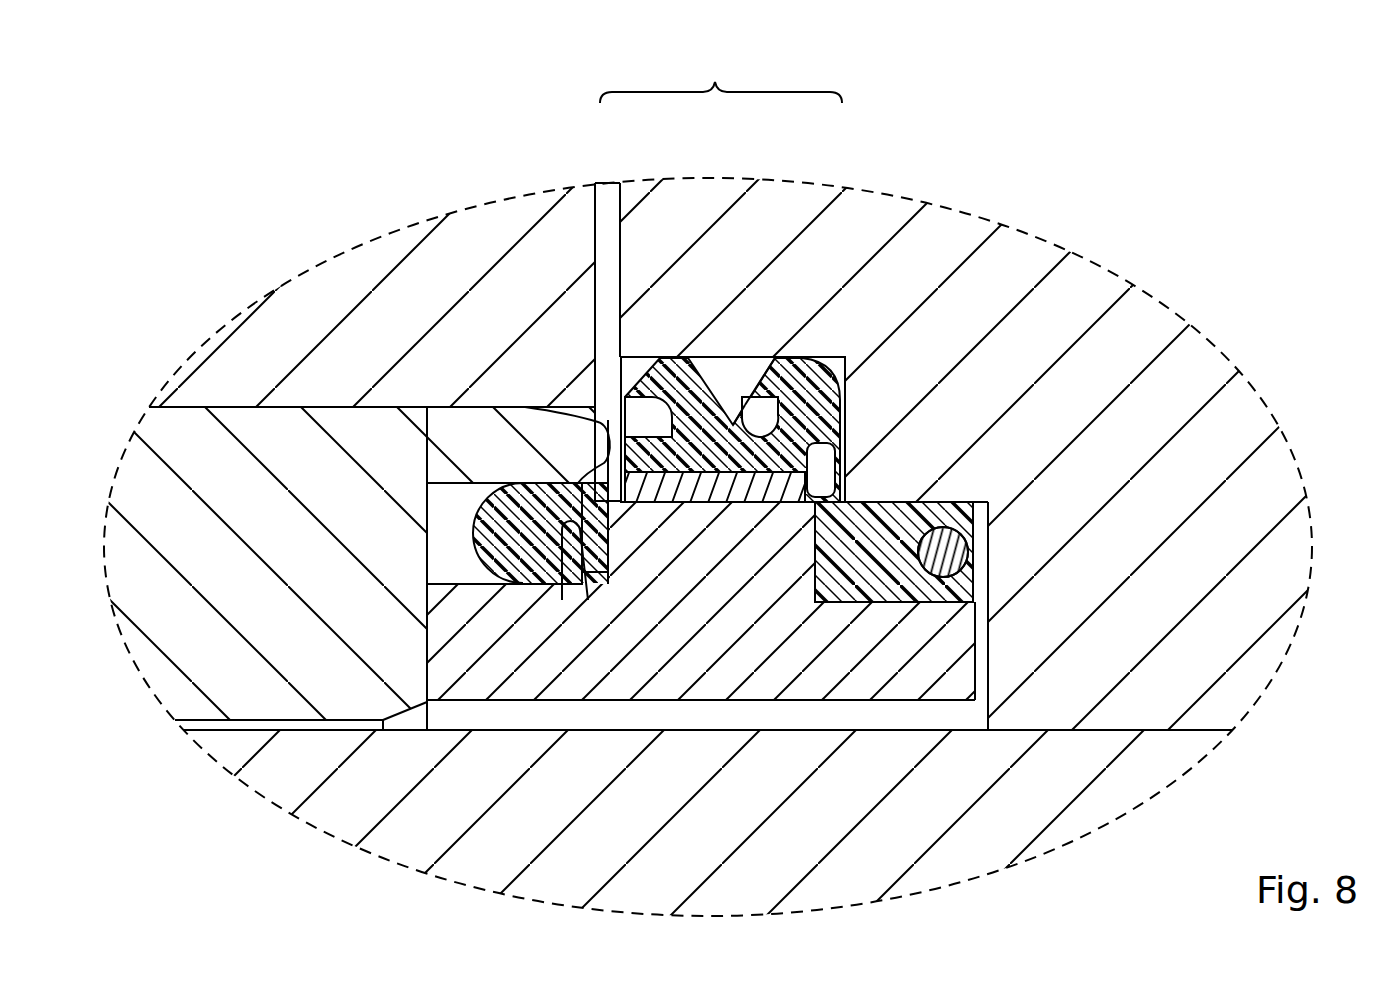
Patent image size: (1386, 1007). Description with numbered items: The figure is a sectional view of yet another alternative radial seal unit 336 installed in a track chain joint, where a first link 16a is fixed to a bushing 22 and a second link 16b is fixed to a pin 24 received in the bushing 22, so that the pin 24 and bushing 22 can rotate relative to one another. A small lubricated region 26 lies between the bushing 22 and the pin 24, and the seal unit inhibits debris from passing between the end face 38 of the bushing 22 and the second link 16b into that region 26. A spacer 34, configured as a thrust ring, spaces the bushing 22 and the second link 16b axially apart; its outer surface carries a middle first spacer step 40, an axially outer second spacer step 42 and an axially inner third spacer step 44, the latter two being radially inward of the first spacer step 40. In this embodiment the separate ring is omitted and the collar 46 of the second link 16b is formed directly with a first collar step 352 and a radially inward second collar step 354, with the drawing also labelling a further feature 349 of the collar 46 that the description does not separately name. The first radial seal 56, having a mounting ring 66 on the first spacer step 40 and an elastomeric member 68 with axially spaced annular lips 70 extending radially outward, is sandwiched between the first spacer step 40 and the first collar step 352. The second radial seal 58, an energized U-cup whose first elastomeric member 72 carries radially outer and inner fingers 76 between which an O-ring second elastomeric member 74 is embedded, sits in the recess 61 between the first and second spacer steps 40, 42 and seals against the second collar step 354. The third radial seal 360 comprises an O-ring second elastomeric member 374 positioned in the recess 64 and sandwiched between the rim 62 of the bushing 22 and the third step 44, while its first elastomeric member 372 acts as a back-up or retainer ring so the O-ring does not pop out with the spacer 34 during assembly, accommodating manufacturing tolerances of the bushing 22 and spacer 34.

The first link 16a is at (342, 280).
The second link 16b is at (942, 234).
The bushing 22 is at (137, 468).
The pin 24 is at (395, 848).
The region 26 is at (256, 720).
The spacer 34 is at (663, 695).
The end face 38 is at (600, 435).
The first spacer step 40 is at (743, 498).
The second spacer step 42 is at (980, 642).
The third spacer step 44 is at (473, 552).
The collar 46 is at (1150, 318).
The first radial seal 56 is at (723, 370).
The second radial seal 58 is at (1000, 537).
The recess 61 is at (825, 598).
The rim 62 is at (522, 422).
The recess 64 is at (590, 582).
The mounting ring 66 is at (665, 490).
The elastomeric member 68 is at (830, 412).
The annular lips 70 is at (662, 362).
The first elastomeric member 72 is at (822, 556).
The second elastomeric member 74 is at (968, 552).
The fingers 76 is at (963, 505).
The radial seal unit 336 is at (721, 74).
The notch 349 is at (748, 356).
The first collar step 352 is at (776, 368).
The second collar step 354 is at (920, 502).
The third radial seal 360 is at (452, 527).
The first elastomeric member 372 is at (570, 525).
The second elastomeric member 374 is at (533, 550).